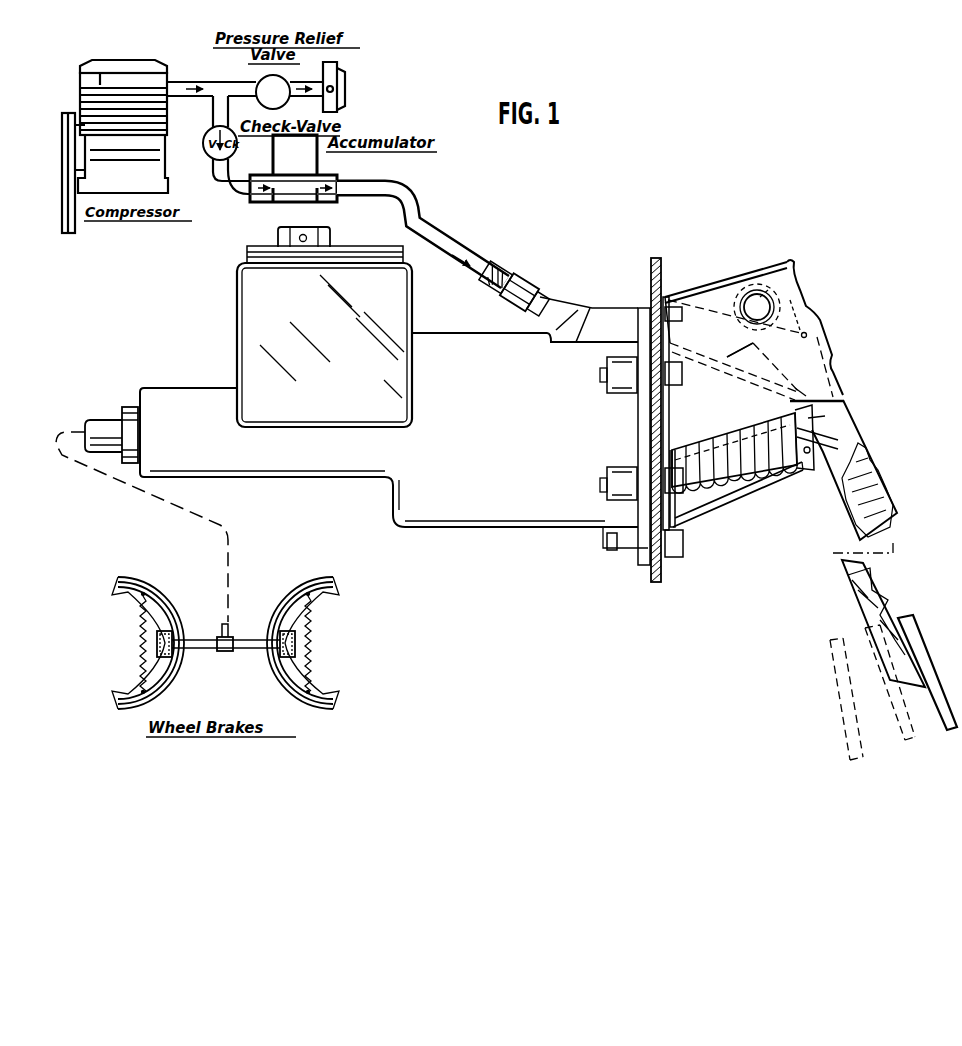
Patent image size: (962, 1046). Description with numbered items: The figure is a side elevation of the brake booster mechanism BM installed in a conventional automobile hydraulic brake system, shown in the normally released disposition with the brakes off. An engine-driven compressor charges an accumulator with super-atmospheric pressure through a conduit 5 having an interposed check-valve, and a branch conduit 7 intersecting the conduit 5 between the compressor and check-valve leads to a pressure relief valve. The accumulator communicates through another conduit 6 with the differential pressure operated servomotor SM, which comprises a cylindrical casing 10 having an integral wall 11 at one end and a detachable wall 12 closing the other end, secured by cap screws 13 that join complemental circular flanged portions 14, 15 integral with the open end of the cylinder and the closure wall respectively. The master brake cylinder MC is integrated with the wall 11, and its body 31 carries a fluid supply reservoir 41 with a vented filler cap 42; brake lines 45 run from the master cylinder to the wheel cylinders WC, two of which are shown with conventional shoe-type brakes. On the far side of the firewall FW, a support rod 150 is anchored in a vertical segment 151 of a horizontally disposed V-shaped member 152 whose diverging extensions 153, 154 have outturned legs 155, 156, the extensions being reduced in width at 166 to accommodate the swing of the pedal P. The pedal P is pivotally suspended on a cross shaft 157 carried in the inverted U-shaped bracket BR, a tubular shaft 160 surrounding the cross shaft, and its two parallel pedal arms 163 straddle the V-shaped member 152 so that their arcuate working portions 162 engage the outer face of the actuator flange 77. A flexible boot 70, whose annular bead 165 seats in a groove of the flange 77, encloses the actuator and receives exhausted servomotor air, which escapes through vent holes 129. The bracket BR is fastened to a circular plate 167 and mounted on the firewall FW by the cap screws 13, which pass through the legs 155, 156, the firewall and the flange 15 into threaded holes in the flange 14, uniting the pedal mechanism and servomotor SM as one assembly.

The conduit 5 is at (212, 108).
The conduit 6 is at (476, 250).
The branch conduit 7 is at (220, 82).
The cylindrical casing 10 is at (497, 538).
The integral wall 11 is at (390, 500).
The detachable wall 12 is at (650, 560).
The cap screws 13 is at (663, 557).
The flanged portion 14 is at (638, 400).
The flanged portion 15 is at (650, 445).
The body 31 is at (297, 460).
The fluid supply reservoir 41 is at (265, 318).
The vented filler cap 42 is at (275, 236).
The brake lines 45 is at (225, 560).
The boot 70 is at (712, 478).
The actuator flange 77 is at (811, 455).
The vent holes 129 is at (789, 440).
The support rod 150 is at (848, 400).
The vertical segment 151 is at (816, 438).
The V-shaped member 152 is at (767, 486).
The diverging extension 153 is at (703, 527).
The diverging extension 154 is at (767, 355).
The outturned leg 155 is at (663, 578).
The outturned leg 156 is at (680, 288).
The cross shaft 157 is at (763, 307).
The tubular shaft 160 is at (790, 268).
The arcuate working portions 162 is at (810, 417).
The pedal arms 163 is at (868, 450).
The annular bead 165 is at (814, 381).
The reduced width portion 166 is at (772, 426).
The circular plate 167 is at (668, 413).
The master brake cylinder MC is at (222, 372).
The brake booster mechanism BM is at (487, 326).
The servomotor SM is at (605, 304).
The firewall FW is at (664, 262).
The bracket BR is at (795, 240).
The pedal P is at (846, 524).
The wheel cylinders WC is at (167, 657).